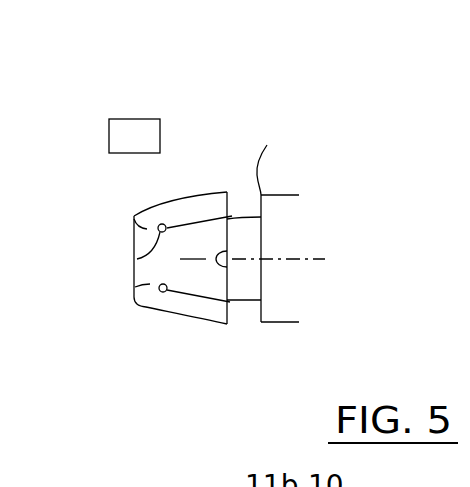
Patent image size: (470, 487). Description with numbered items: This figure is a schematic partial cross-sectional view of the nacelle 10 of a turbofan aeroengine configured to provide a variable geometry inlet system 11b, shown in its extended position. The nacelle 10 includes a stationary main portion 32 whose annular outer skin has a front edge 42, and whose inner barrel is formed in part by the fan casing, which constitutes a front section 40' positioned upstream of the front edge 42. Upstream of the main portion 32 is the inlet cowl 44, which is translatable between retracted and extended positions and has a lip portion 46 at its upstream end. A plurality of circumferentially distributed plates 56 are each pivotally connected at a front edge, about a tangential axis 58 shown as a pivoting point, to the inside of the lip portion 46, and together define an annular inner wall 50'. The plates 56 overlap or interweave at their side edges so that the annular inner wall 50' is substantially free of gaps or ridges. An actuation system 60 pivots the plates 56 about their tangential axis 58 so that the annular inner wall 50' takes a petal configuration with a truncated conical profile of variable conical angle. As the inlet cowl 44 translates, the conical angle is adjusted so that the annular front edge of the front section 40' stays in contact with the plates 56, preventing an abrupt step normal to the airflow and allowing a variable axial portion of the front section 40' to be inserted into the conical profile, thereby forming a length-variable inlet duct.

The nacelle 10 is at (310, 141).
The variable geometry inlet system 11b is at (246, 127).
The main portion 32 is at (283, 315).
The front section 40' is at (273, 358).
The front edge 42 is at (277, 215).
The inlet cowl 44 is at (155, 305).
The lip portion 46 is at (134, 217).
The annular inner wall 50' is at (180, 215).
The plates 56 is at (187, 298).
The tangential axis 58 is at (137, 261).
The actuation system 60 is at (163, 212).